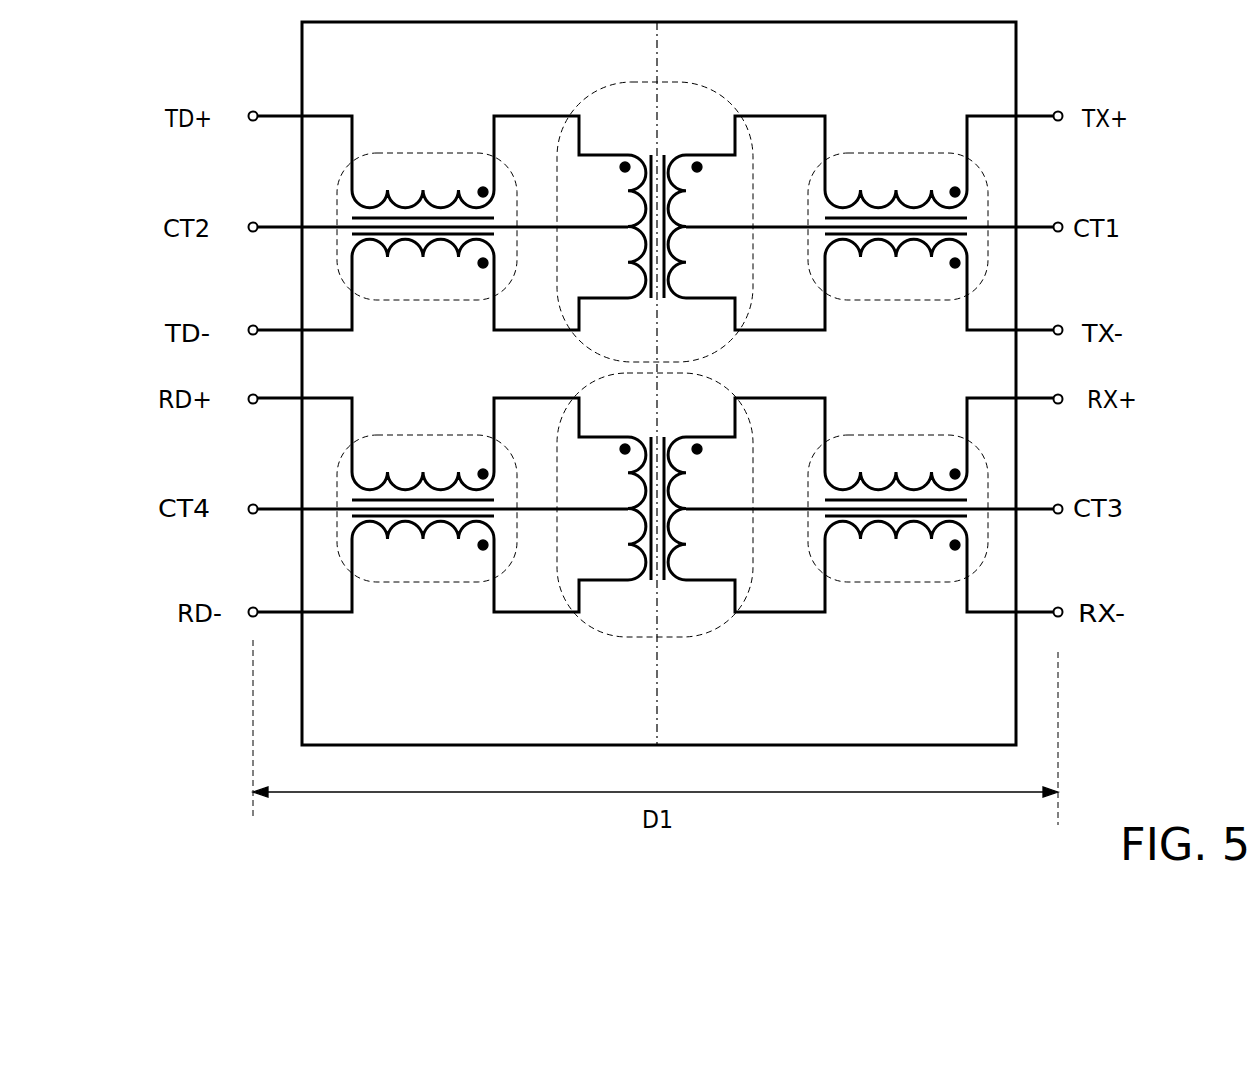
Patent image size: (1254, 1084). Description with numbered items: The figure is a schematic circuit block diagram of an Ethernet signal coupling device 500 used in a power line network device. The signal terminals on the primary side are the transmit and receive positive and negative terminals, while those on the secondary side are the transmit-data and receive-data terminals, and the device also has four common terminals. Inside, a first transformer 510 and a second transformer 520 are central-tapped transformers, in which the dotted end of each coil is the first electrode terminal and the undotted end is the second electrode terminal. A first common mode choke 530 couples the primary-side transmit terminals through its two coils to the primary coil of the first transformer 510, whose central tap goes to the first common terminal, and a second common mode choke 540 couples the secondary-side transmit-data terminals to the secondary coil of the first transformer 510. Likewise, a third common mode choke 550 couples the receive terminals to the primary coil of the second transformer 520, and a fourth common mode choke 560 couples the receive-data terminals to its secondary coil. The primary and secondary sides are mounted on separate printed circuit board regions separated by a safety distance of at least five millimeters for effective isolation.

The Ethernet signal coupling device 500 is at (597, 737).
The first transformer 510 is at (693, 88).
The second transformer 520 is at (670, 637).
The first common mode choke 530 is at (862, 153).
The second common mode choke 540 is at (380, 153).
The third common mode choke 550 is at (850, 573).
The fourth common mode choke 560 is at (378, 573).